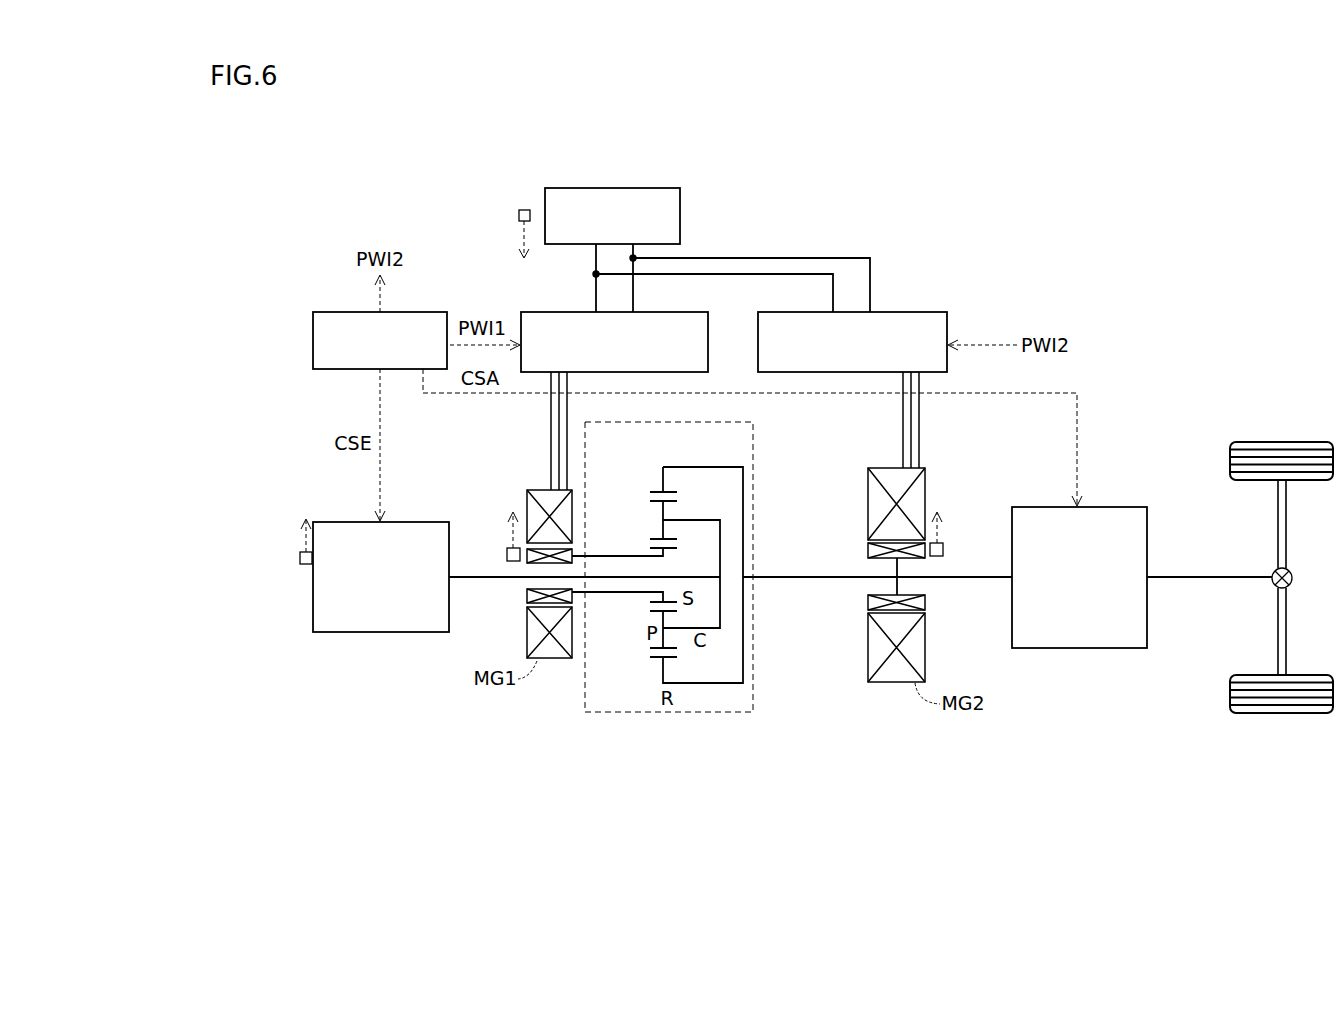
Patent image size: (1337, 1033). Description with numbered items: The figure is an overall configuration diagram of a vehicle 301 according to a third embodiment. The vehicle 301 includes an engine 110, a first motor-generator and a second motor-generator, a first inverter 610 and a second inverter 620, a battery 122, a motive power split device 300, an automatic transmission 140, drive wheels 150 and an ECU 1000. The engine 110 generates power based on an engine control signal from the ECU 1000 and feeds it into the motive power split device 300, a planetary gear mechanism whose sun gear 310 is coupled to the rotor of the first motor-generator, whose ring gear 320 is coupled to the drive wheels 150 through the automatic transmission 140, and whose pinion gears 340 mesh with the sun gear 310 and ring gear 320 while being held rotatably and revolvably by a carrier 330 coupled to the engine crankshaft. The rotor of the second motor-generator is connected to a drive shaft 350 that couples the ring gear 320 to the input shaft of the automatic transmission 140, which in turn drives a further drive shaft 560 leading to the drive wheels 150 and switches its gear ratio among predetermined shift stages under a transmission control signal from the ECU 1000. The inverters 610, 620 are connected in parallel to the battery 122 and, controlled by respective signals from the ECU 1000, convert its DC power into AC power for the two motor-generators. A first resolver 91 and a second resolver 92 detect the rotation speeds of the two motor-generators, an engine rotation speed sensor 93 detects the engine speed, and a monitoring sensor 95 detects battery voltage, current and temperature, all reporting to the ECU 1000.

The vehicle 301 is at (741, 135).
The monitoring sensor 95 is at (522, 209).
The battery 122 is at (680, 207).
The ECU 1000 is at (313, 345).
The inverter 610 is at (663, 312).
The inverter 620 is at (903, 312).
The drive wheels 150 is at (1303, 438).
The engine rotation speed sensor 93 is at (299, 559).
The resolver 91 is at (506, 555).
The resolver 92 is at (946, 550).
The engine 110 is at (388, 632).
The ring gear 320 is at (654, 489).
The carrier 330 is at (710, 519).
The pinion gears 340 is at (659, 504).
The sun gear 310 is at (665, 550).
The drive shaft 350 is at (784, 578).
The drive shaft 560 is at (1173, 579).
The automatic transmission 140 is at (1073, 648).
The motive power split device 300 is at (693, 712).